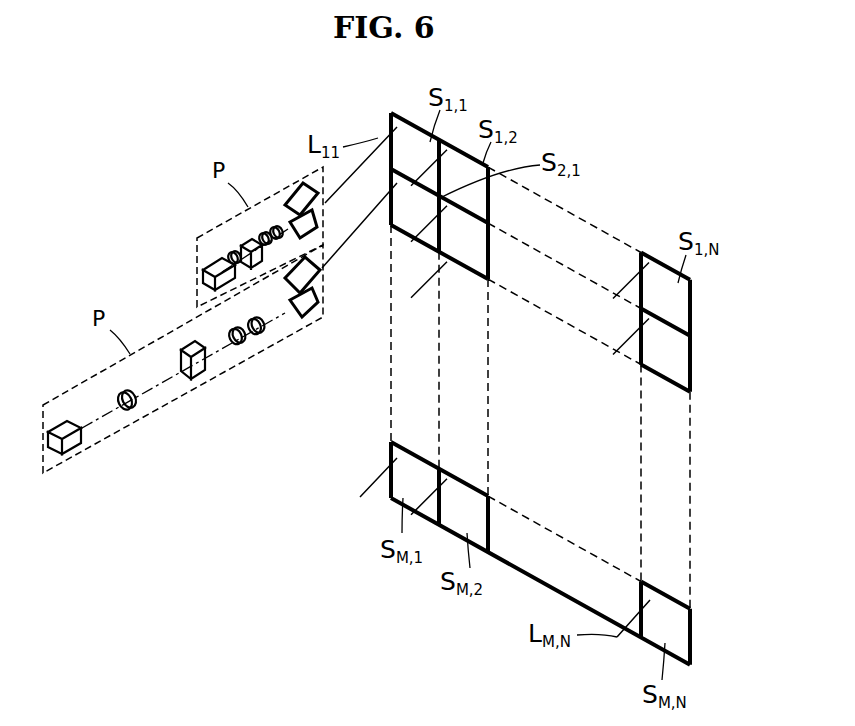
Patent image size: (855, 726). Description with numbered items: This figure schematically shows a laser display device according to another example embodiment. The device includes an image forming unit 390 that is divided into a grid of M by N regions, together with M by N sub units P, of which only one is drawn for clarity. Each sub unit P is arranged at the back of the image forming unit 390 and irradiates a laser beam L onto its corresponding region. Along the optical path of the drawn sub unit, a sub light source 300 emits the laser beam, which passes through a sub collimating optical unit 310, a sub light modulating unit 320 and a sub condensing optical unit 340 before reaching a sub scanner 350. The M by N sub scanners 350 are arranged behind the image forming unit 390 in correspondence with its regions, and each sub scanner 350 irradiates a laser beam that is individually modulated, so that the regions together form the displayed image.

The sub light source 300 is at (68, 452).
The sub collimating optical unit 310 is at (135, 408).
The sub light modulating unit 320 is at (205, 382).
The sub condensing optical unit 340 is at (245, 346).
The sub scanner 350 is at (312, 300).
The image forming unit 390 is at (692, 310).